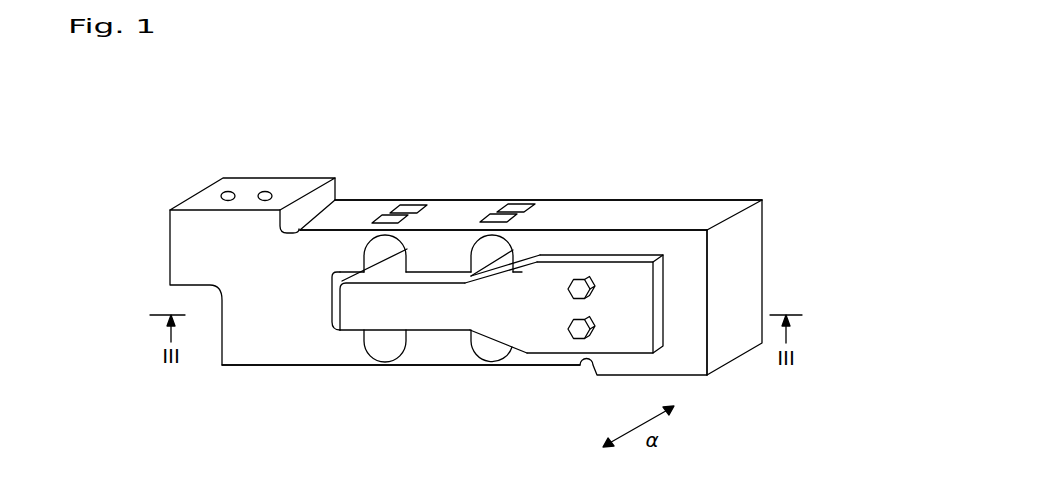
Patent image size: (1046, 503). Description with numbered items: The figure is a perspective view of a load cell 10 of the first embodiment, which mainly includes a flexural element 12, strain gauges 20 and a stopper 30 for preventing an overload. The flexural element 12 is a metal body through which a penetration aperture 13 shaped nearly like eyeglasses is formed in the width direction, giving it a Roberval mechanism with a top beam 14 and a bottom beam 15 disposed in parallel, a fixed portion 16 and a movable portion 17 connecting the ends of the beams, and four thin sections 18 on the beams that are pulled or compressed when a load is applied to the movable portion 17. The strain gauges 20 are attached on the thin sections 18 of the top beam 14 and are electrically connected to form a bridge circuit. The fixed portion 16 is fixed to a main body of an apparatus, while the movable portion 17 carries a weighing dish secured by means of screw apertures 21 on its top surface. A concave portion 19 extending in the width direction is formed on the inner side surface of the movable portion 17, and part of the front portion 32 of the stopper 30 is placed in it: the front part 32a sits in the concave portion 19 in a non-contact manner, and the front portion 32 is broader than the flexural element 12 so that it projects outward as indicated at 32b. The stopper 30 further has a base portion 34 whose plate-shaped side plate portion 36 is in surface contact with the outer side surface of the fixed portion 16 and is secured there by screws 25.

The load cell 10 is at (560, 180).
The flexural element 12 is at (464, 200).
The penetration aperture 13 is at (364, 351).
The top beam 14 is at (445, 253).
The bottom beam 15 is at (418, 361).
The fixed portion 16 is at (680, 285).
The movable portion 17 is at (273, 280).
The thin section 18 is at (383, 240).
The concave portion 19 is at (332, 302).
The strain gauge 20 is at (392, 221).
The screw aperture 21 is at (268, 189).
The screw 25 is at (586, 279).
The stopper 30 is at (464, 316).
The front portion 32 is at (367, 300).
The front part 32a is at (343, 272).
The projecting part of the front portion 32b is at (353, 318).
The base portion 34 is at (502, 351).
The side plate portion 36 is at (540, 327).